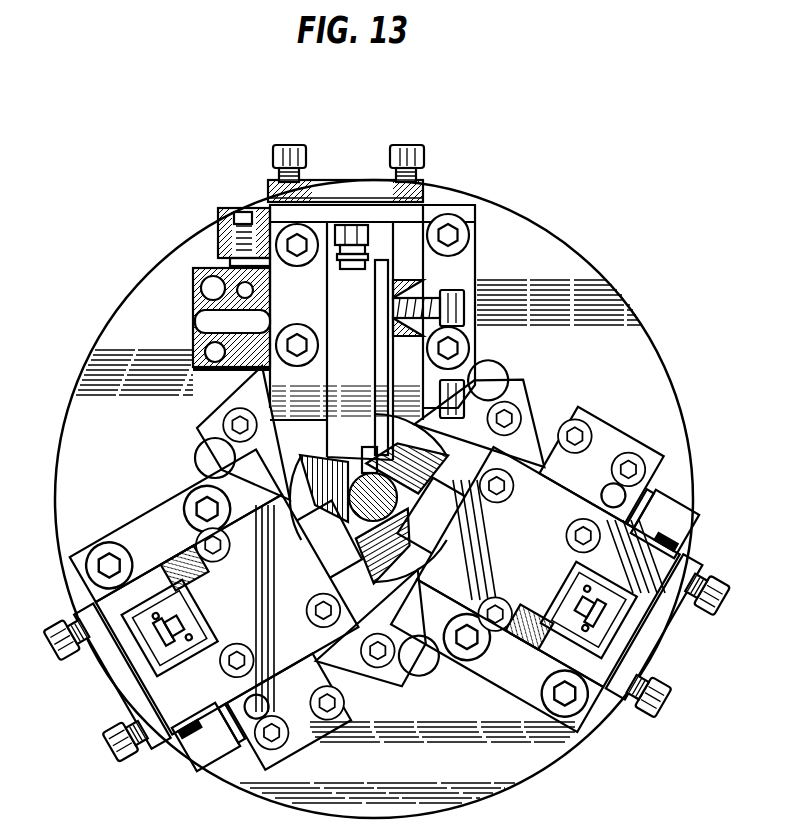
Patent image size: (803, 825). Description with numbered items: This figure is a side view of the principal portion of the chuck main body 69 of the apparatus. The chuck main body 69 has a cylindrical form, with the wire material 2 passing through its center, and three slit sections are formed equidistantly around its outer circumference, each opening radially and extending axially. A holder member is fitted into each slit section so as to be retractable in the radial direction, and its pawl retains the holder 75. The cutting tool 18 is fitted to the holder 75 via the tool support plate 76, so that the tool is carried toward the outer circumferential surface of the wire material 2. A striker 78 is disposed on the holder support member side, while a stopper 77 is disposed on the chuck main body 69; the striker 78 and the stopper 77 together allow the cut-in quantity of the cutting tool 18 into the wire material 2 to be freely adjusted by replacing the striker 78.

The wire material 2 is at (386, 488).
The cutting tool 18 is at (343, 298).
The chuck main body 69 is at (520, 747).
The holder 75 is at (418, 262).
The tool support plate 76 is at (168, 733).
The stopper 77 is at (193, 280).
The striker 78 is at (218, 245).